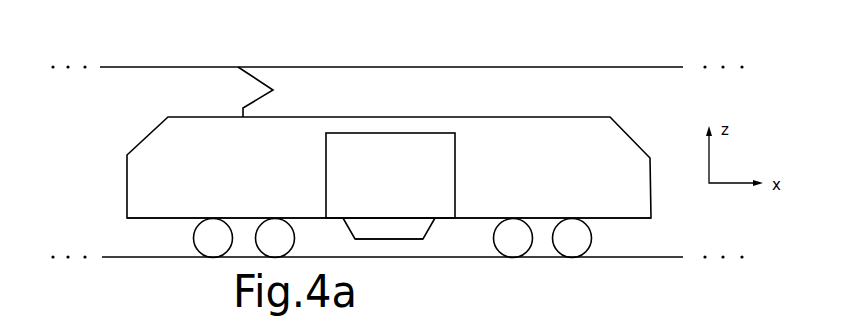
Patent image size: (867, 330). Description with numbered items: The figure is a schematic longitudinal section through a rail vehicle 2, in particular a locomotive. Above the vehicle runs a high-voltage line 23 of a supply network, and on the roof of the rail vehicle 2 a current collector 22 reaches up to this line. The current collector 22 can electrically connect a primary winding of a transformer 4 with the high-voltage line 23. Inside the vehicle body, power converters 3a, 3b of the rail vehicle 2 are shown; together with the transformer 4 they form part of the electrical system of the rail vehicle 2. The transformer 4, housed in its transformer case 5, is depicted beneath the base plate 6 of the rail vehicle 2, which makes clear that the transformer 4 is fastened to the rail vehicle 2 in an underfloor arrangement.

The rail vehicle 2 is at (627, 135).
The power converter 3a is at (443, 175).
The power converter 3b is at (455, 162).
The transformer 4 is at (415, 227).
The transformer case 5 is at (427, 239).
The base plate 6 is at (497, 218).
The current collector 22 is at (263, 84).
The high-voltage line 23 is at (513, 67).